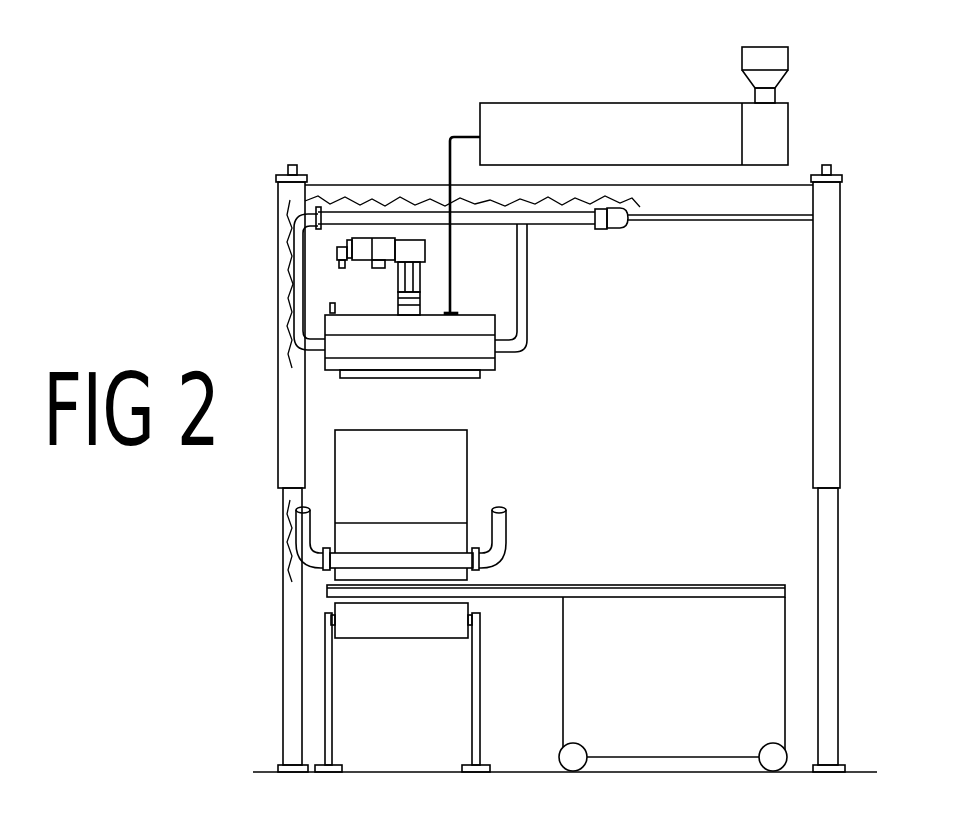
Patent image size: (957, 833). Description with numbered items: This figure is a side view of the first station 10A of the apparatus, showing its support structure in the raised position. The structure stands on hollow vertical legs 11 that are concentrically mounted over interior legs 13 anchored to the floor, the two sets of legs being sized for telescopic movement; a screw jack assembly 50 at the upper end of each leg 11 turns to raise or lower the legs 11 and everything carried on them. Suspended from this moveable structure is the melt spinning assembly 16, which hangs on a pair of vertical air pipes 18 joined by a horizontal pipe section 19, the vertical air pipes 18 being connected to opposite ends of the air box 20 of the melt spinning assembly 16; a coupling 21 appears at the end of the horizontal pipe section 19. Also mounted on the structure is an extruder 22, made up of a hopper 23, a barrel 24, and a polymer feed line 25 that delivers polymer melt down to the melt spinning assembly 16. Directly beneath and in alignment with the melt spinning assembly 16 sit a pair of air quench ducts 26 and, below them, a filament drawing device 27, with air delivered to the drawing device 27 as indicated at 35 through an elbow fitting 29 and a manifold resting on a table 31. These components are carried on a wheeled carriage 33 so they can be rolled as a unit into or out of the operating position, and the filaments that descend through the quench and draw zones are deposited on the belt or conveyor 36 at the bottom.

The first station 10A is at (352, 158).
The vertical legs 11 is at (828, 385).
The interior legs 13 is at (290, 638).
The melt spinning assembly 16 is at (438, 333).
The vertical air pipes 18 is at (296, 300).
The horizontal pipe section 19 is at (393, 217).
The air box 20 is at (370, 353).
The coupling 21 is at (630, 226).
The extruder 22 is at (634, 90).
The hopper 23 is at (762, 52).
The barrel 24 is at (582, 112).
The polymer feed line 25 is at (468, 133).
The air quench ducts 26 is at (457, 470).
The filament drawing device 27 is at (441, 557).
The left elbow fitting 29 is at (335, 537).
The table 31 is at (470, 580).
The wheeled carriage 33 is at (701, 685).
The air delivery to filament drawing device 35 is at (500, 530).
The belt or conveyor 36 is at (418, 632).
The screw jack assembly 50 is at (279, 173).